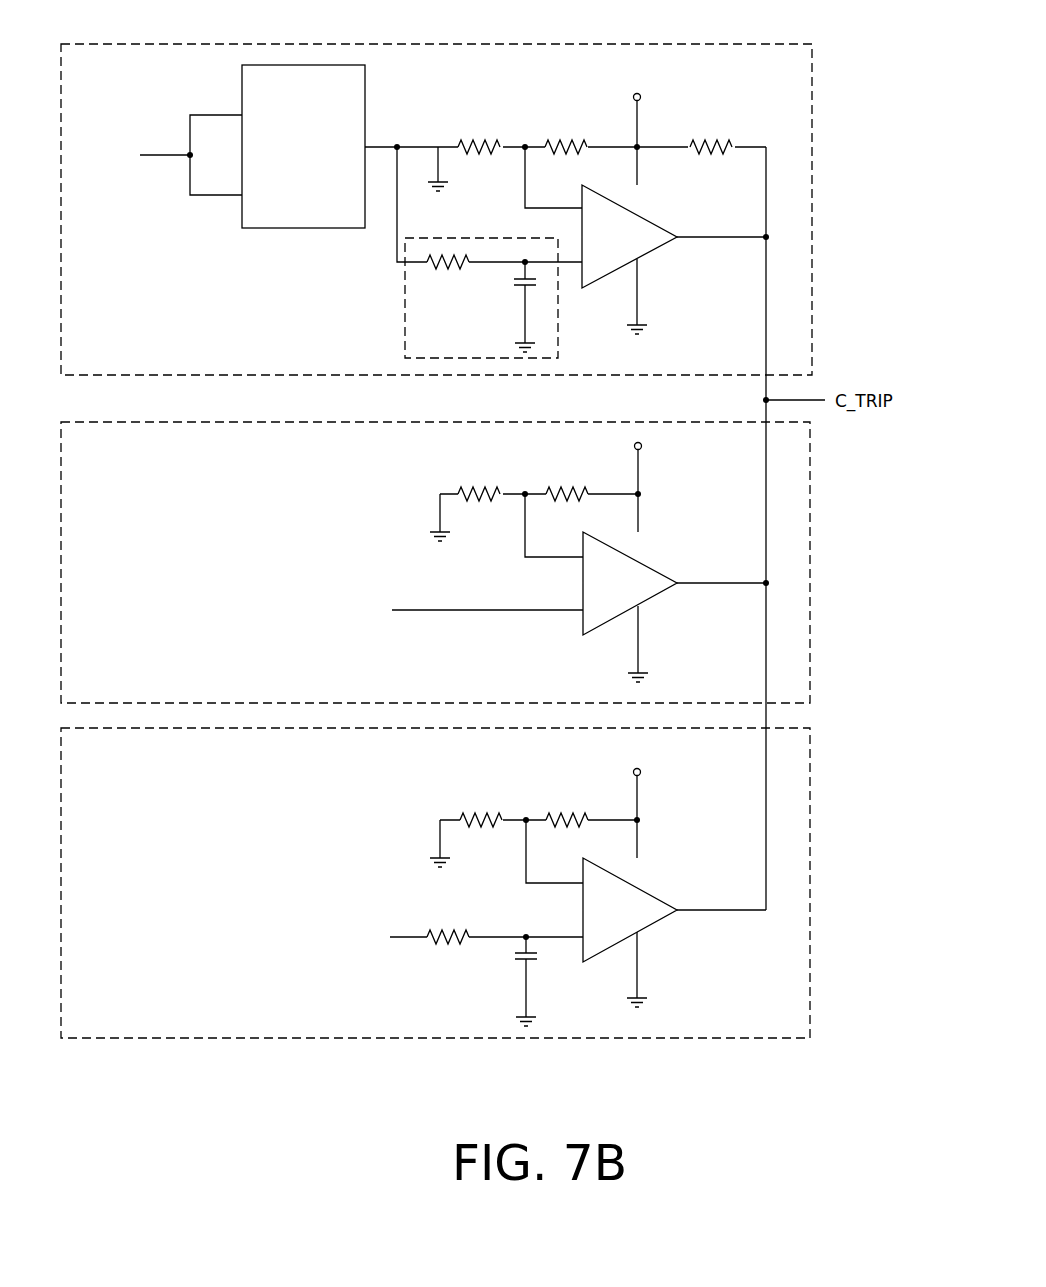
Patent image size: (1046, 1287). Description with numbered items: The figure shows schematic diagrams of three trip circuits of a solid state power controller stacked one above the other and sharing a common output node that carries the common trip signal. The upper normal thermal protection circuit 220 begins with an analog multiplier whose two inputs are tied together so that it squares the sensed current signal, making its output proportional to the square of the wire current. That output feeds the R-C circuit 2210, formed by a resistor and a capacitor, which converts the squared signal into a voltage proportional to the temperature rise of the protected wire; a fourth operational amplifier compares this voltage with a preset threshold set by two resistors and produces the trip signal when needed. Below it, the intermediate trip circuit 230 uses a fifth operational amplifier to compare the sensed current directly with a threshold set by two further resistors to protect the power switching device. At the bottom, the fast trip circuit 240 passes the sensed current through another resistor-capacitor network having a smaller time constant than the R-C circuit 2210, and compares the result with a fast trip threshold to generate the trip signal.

The normal thermal protection circuit 220 is at (812, 186).
The R-C circuit 2210 is at (405, 312).
The intermediate trip circuit 230 is at (810, 538).
The fast trip circuit 240 is at (810, 874).